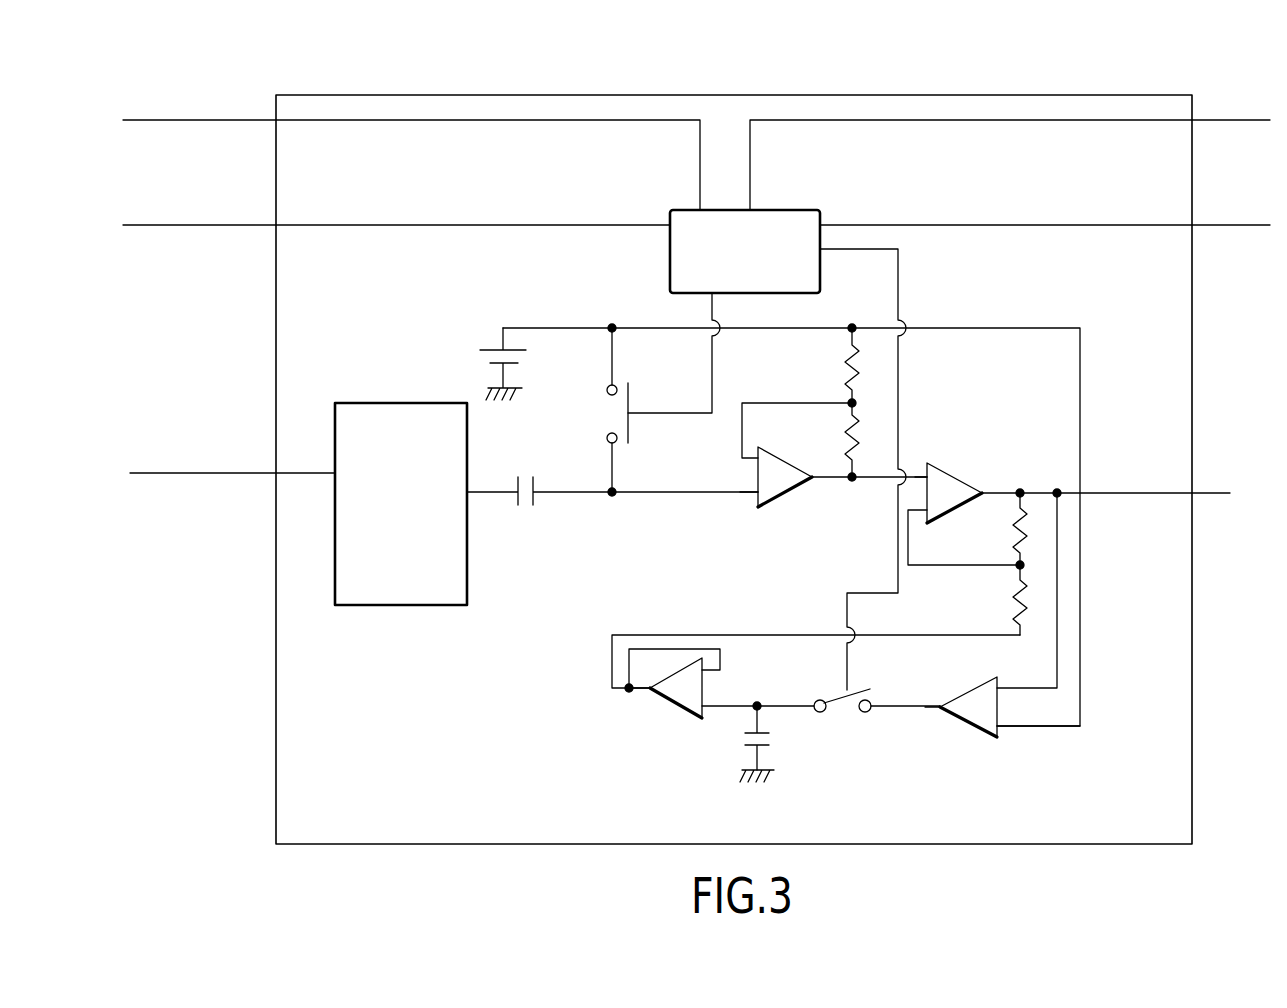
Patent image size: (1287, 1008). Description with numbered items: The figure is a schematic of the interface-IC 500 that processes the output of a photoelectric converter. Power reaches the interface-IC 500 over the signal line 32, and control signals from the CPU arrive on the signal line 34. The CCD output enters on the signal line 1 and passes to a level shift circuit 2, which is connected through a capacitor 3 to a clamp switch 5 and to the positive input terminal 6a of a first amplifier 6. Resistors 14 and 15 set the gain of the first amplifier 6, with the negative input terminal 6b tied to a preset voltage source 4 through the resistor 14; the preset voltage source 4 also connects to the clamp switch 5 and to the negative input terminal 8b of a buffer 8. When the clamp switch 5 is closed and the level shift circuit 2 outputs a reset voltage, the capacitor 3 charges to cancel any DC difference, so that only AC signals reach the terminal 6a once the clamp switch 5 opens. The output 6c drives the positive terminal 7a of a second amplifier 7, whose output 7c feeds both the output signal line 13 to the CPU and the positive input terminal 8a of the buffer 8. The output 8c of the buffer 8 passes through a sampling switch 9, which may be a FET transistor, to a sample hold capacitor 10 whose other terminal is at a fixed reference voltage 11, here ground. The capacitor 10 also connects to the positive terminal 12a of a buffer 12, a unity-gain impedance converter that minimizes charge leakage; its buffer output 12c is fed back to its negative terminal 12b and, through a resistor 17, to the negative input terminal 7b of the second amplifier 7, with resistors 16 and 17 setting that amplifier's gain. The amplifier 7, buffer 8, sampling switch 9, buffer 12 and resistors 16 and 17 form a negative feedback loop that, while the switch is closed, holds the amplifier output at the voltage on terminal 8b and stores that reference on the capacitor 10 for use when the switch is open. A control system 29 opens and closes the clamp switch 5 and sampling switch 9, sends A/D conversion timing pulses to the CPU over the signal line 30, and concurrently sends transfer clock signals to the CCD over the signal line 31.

The signal line 1 is at (190, 474).
The level shift circuit 2 is at (407, 606).
The capacitor 3 is at (528, 506).
The preset voltage source 4 is at (493, 360).
The clamp switch 5 is at (610, 415).
The first amplifier 6 is at (809, 495).
The positive input terminal 6a is at (756, 494).
The negative input terminal 6b is at (742, 462).
The output 6c is at (812, 482).
The second amplifier 7 is at (934, 474).
The positive terminal 7a is at (922, 468).
The negative input terminal 7b is at (906, 512).
The output 7c is at (990, 491).
The buffer 8 is at (984, 652).
The positive input terminal 8a is at (1005, 687).
The negative input terminal 8b is at (1000, 728).
The output 8c is at (940, 710).
The sampling switch 9 is at (845, 700).
The sample hold capacitor 10 is at (775, 740).
The fixed reference voltage 11 is at (745, 775).
The buffer 12 is at (690, 720).
The positive terminal 12a is at (706, 708).
The negative terminal 12b is at (712, 665).
The buffer output 12c is at (642, 690).
The signal line 13 is at (1213, 493).
The resistor 14 is at (850, 342).
The resistor 15 is at (850, 417).
The resistor 16 is at (1017, 523).
The resistor 17 is at (1017, 596).
The control system 29 is at (802, 210).
The signal line 30 is at (1237, 226).
The signal line 31 is at (200, 226).
The signal line 32 is at (196, 120).
The signal line 34 is at (1210, 121).
The interface-IC 500 is at (1112, 95).